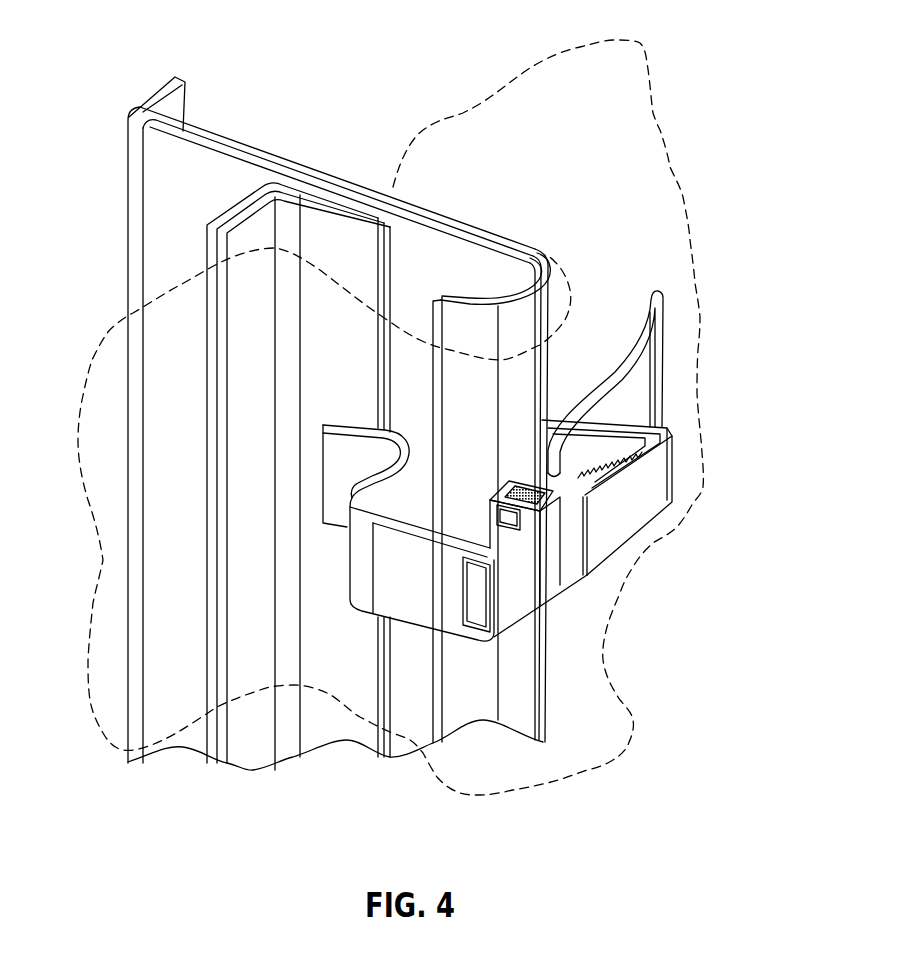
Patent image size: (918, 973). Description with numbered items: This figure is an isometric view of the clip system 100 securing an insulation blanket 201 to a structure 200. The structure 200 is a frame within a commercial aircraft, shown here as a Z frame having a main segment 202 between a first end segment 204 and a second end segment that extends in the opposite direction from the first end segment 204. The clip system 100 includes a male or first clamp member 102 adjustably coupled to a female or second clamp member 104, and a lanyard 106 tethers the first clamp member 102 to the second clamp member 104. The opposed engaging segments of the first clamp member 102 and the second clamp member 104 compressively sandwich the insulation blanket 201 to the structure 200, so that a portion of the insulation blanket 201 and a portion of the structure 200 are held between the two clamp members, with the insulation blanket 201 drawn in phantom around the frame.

The clip system 100 is at (677, 488).
The first clamp member 102 is at (670, 442).
The second clamp member 104 is at (510, 593).
The lanyard 106 is at (658, 367).
The structure 200 is at (232, 150).
The insulation blanket 201 is at (650, 145).
The main segment 202 is at (535, 267).
The first end segment 204 is at (163, 92).